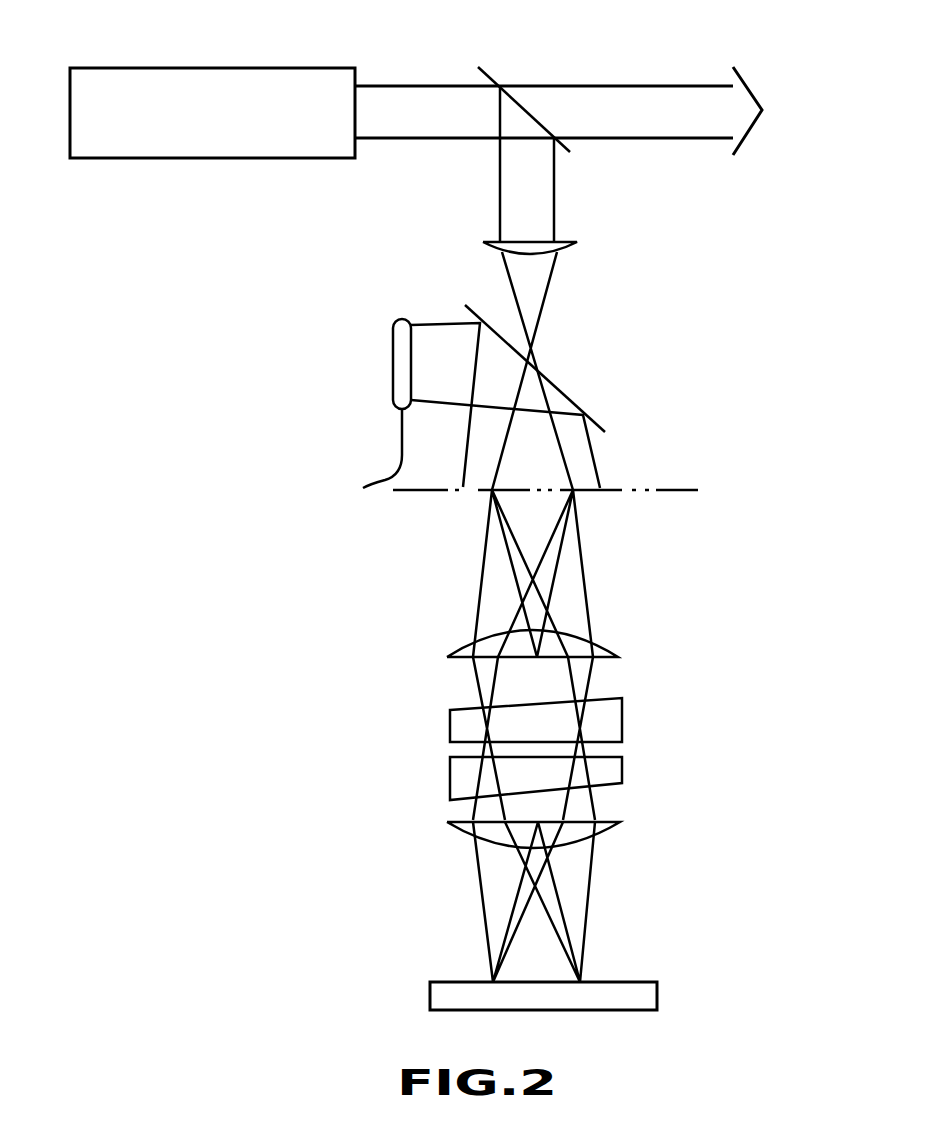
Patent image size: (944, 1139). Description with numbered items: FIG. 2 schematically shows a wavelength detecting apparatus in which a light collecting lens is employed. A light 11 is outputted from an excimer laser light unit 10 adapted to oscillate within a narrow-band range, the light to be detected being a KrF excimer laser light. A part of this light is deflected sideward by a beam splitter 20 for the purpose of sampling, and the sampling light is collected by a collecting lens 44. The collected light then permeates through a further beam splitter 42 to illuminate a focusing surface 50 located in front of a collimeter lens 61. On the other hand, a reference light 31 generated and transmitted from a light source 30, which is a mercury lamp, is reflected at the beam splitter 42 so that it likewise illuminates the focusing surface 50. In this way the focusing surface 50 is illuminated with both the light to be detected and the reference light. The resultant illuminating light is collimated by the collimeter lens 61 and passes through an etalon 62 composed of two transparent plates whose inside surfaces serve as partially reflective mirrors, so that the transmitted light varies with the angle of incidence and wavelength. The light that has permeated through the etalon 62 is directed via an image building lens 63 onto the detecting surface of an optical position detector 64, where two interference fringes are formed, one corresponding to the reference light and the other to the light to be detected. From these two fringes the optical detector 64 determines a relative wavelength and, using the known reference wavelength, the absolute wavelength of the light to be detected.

The excimer laser light unit 10 is at (308, 68).
The light 11 is at (413, 85).
The beam splitter 20 is at (500, 86).
The light source 30 is at (393, 350).
The reference light 31 is at (430, 324).
The beam splitter 42 is at (573, 402).
The collecting lens 44 is at (565, 242).
The focusing surface 50 is at (660, 487).
The collimeter lens 61 is at (608, 656).
The etalon 62 is at (640, 697).
The image building lens 63 is at (617, 821).
The optical position detector 64 is at (638, 980).